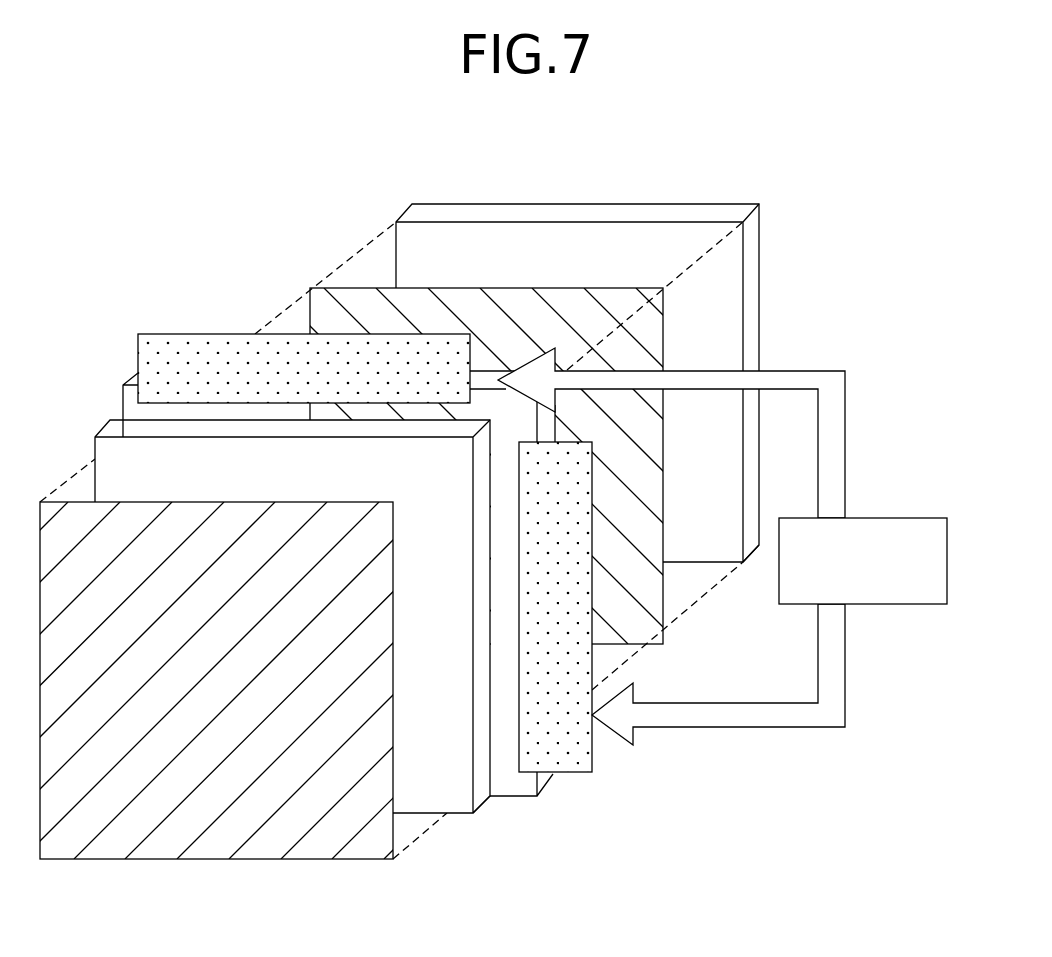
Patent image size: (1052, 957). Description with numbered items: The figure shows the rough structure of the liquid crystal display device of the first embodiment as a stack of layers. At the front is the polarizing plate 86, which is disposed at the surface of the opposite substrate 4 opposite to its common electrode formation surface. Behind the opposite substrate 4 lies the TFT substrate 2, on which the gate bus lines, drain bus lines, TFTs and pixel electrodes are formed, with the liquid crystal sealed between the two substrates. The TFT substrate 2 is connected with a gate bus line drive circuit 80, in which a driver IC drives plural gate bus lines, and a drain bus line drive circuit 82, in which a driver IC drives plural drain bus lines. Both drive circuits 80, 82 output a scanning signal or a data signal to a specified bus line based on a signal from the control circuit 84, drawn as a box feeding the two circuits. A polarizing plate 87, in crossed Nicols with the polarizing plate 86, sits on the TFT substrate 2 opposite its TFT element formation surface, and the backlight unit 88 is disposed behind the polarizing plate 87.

The TFT substrate 2 is at (520, 800).
The opposite substrate 4 is at (460, 815).
The gate bus line drive circuit 80 is at (568, 742).
The drain bus line drive circuit 82 is at (222, 333).
The control circuit 84 is at (935, 518).
The polarizing plate 86 is at (266, 839).
The polarizing plate 87 is at (645, 628).
The backlight unit 88 is at (755, 265).